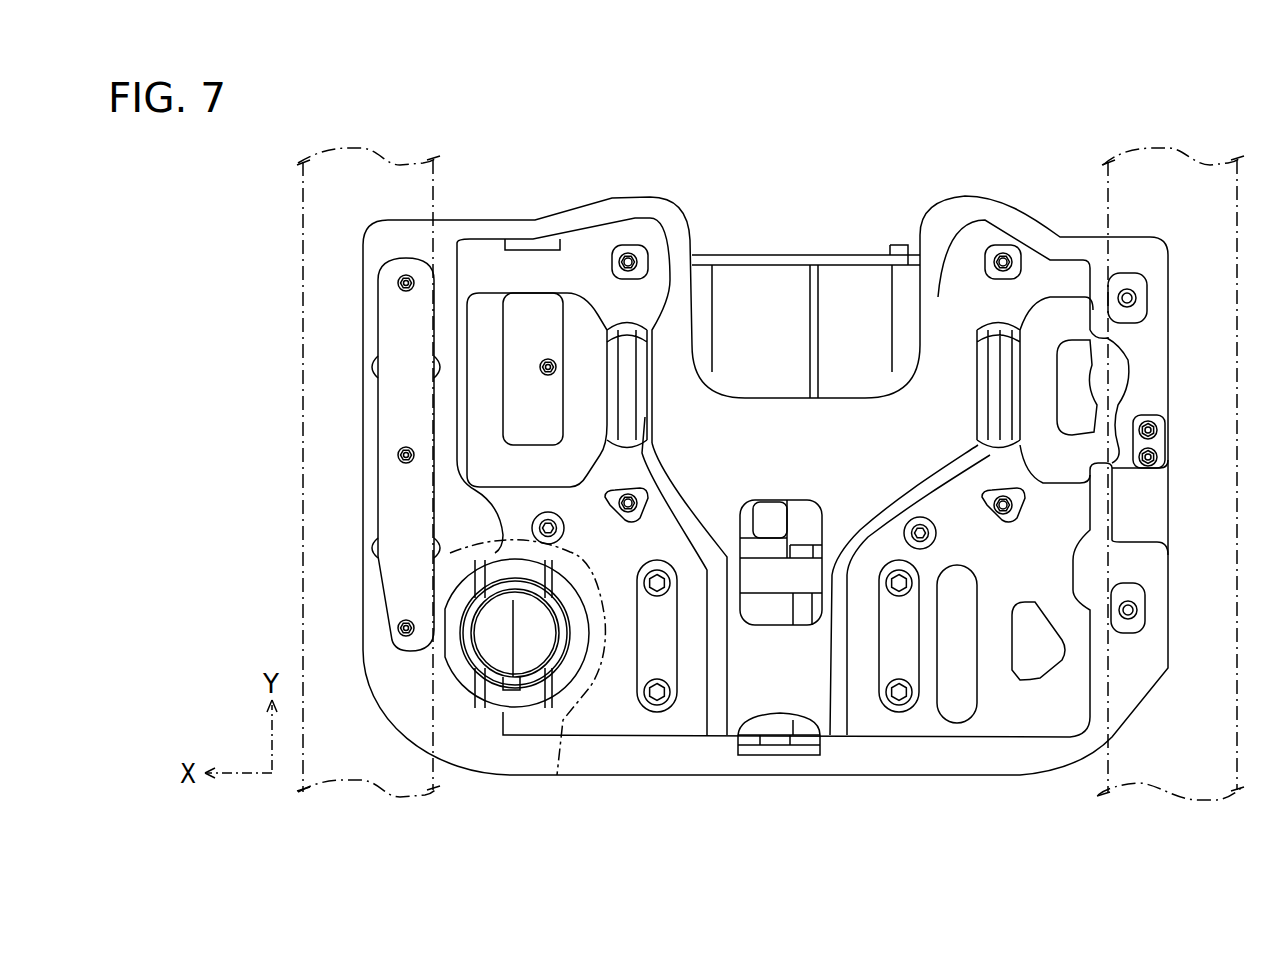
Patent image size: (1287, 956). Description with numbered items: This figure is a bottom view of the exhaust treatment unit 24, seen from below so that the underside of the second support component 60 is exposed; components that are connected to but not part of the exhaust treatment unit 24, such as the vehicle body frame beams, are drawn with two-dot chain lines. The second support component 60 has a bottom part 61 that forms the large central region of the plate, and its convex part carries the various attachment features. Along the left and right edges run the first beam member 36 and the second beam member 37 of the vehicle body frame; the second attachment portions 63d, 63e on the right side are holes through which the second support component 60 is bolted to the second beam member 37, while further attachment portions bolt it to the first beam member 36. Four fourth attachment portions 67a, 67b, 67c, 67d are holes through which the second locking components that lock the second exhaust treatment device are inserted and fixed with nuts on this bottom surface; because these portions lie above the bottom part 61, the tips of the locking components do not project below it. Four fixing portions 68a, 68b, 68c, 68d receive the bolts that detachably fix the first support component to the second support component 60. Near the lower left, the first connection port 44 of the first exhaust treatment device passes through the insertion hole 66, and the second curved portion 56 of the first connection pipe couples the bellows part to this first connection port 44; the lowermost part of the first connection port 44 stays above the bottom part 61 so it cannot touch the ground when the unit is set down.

The exhaust treatment unit 24 is at (993, 179).
The first beam member 36 is at (396, 153).
The second beam member 37 is at (1192, 155).
The first connection port 44 is at (492, 643).
The second curved portion 56 is at (566, 752).
The second support component 60 is at (1184, 407).
The bottom part 61 is at (773, 455).
The second attachment portion 63d is at (1146, 603).
The second attachment portion 63e is at (1143, 293).
The insertion hole 66 is at (473, 707).
The fourth attachment portion 67a is at (638, 488).
The fourth attachment portion 67b is at (624, 250).
The fourth attachment portion 67c is at (994, 488).
The fourth attachment portion 67d is at (1015, 258).
The fixing portion 68a is at (668, 710).
The fixing portion 68b is at (655, 607).
The fixing portion 68c is at (889, 714).
The fixing portion 68d is at (912, 603).